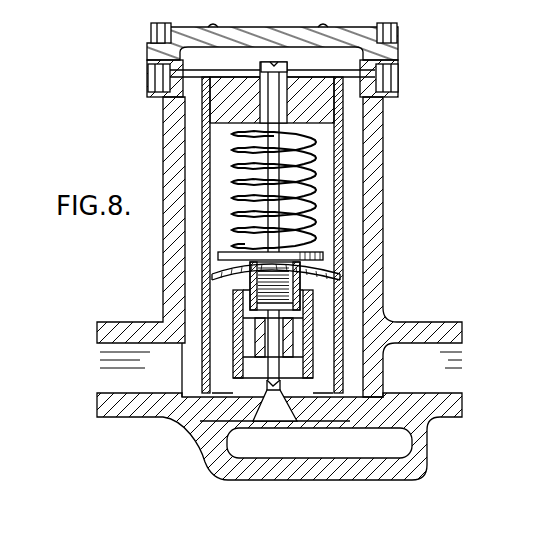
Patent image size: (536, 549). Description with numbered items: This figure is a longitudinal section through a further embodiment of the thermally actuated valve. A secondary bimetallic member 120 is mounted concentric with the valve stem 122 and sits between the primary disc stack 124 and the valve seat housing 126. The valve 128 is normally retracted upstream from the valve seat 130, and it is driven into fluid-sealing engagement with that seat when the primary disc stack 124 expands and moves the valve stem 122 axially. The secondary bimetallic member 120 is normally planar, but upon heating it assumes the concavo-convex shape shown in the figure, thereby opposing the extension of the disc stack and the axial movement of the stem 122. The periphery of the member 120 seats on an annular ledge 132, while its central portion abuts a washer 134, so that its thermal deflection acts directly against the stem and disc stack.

The secondary bimetallic member 120 is at (310, 282).
The valve stem 122 is at (274, 195).
The primary disc stack 124 is at (232, 160).
The valve seat housing 126 is at (317, 310).
The valve 128 is at (276, 385).
The valve seat 130 is at (207, 430).
The annular ledge 132 is at (200, 298).
The washer 134 is at (310, 250).